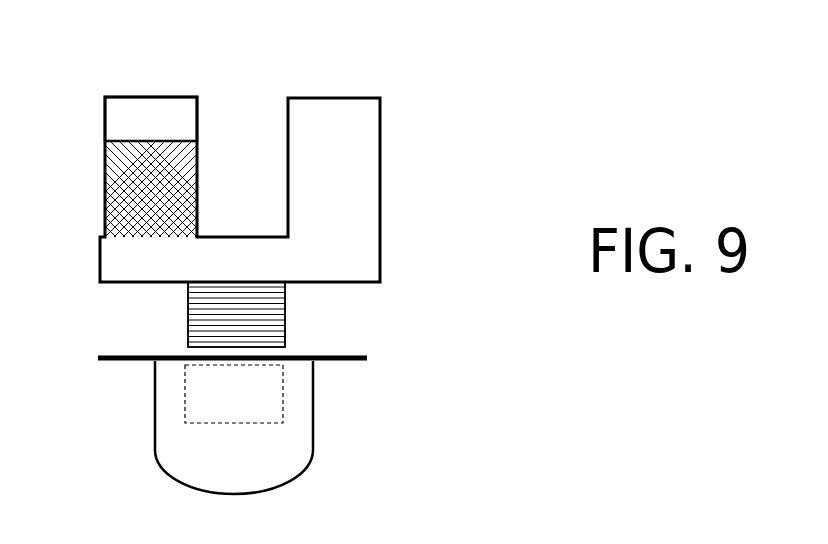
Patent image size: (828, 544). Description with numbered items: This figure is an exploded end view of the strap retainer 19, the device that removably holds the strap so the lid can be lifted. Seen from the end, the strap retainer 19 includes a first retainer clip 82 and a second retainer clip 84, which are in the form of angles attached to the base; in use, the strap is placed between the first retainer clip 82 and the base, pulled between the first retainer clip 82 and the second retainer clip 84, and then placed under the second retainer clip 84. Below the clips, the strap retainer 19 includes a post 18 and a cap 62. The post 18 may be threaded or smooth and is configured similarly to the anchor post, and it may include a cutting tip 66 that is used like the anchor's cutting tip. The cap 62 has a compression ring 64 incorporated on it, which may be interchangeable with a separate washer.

The strap retainer 19 is at (421, 79).
The first retainer clip 82 is at (350, 198).
The second retainer clip 84 is at (143, 97).
The post 18 is at (285, 323).
The cutting tip 66 is at (190, 350).
The compression ring 64 is at (110, 357).
The cap 62 is at (290, 477).